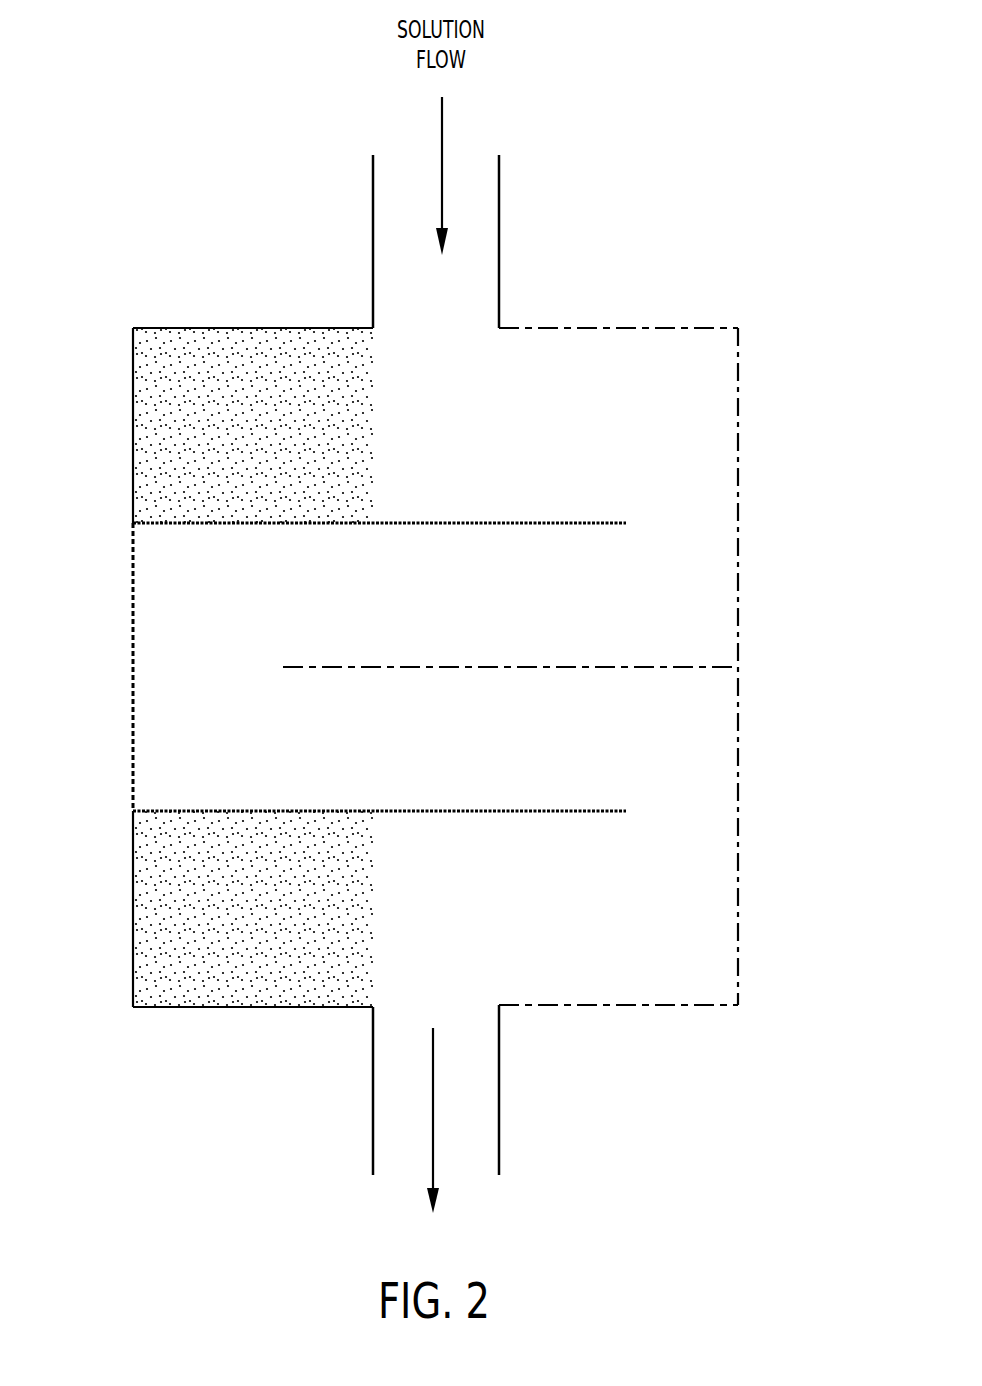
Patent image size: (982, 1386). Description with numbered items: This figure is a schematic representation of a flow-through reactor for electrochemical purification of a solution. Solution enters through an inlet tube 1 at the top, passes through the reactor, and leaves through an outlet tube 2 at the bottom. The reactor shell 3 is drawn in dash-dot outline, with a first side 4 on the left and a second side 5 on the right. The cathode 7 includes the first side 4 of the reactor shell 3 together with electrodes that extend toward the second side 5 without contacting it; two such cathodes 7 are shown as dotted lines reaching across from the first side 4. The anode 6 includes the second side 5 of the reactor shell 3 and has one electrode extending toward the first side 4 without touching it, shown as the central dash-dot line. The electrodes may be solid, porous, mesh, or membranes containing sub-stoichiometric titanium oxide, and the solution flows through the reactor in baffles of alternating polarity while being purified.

The inlet tube 1 is at (373, 184).
The outlet tube 2 is at (373, 1120).
The reactor shell 3 is at (608, 328).
The first side 4 is at (133, 682).
The second side 5 is at (740, 695).
The anode 6 is at (657, 667).
The cathode 7 is at (518, 812).